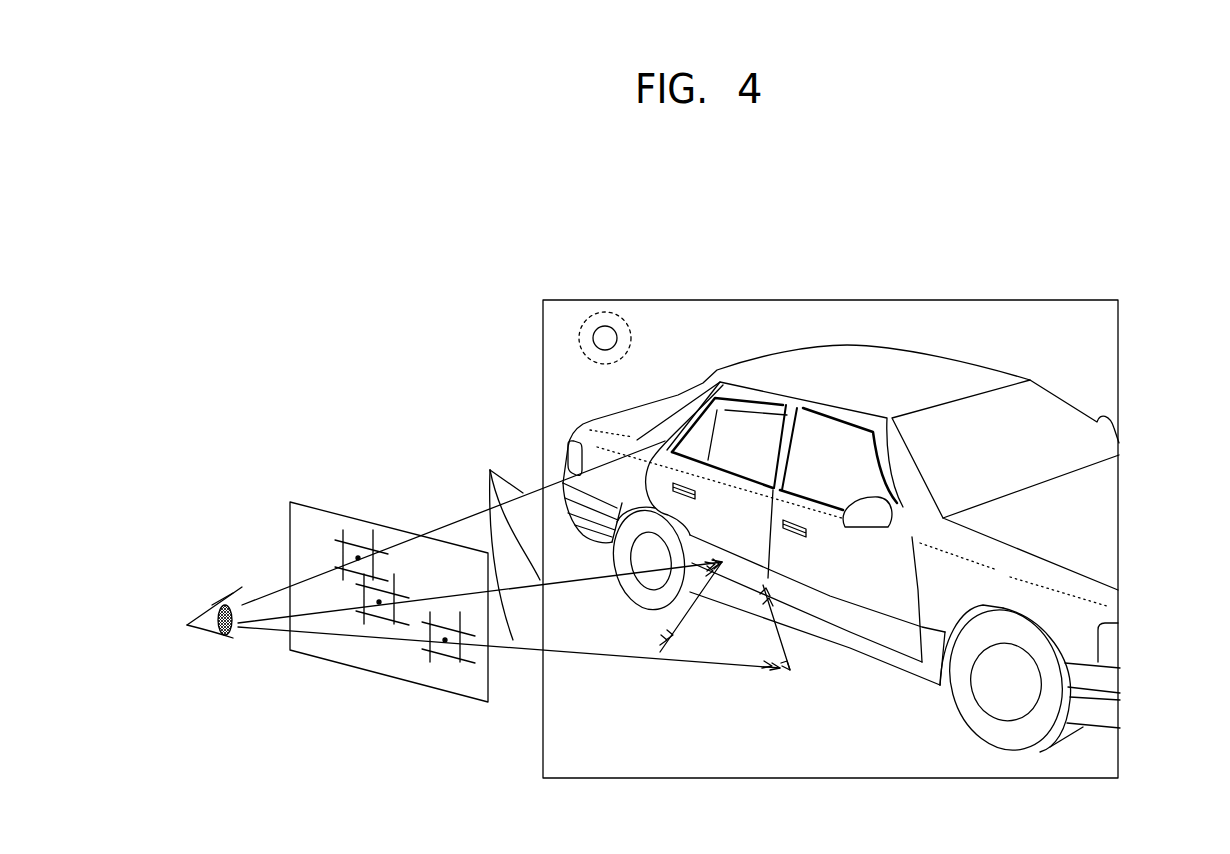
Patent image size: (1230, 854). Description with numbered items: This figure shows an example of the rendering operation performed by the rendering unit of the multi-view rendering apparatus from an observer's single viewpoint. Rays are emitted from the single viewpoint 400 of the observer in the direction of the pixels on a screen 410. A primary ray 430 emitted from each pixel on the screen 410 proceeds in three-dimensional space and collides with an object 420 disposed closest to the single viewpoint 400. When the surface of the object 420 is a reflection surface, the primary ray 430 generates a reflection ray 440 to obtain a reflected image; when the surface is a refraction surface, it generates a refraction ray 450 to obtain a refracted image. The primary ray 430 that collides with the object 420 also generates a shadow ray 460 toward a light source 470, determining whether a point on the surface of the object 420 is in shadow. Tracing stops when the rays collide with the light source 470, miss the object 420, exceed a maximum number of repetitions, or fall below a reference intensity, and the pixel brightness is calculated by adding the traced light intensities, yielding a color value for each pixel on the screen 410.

The single viewpoint 400 is at (208, 630).
The screen 410 is at (433, 688).
The object 420 is at (873, 539).
The primary ray 430 is at (490, 470).
The reflection ray 440 is at (692, 623).
The refraction ray 450 is at (762, 410).
The shadow ray 460 is at (790, 648).
The light source 470 is at (612, 325).